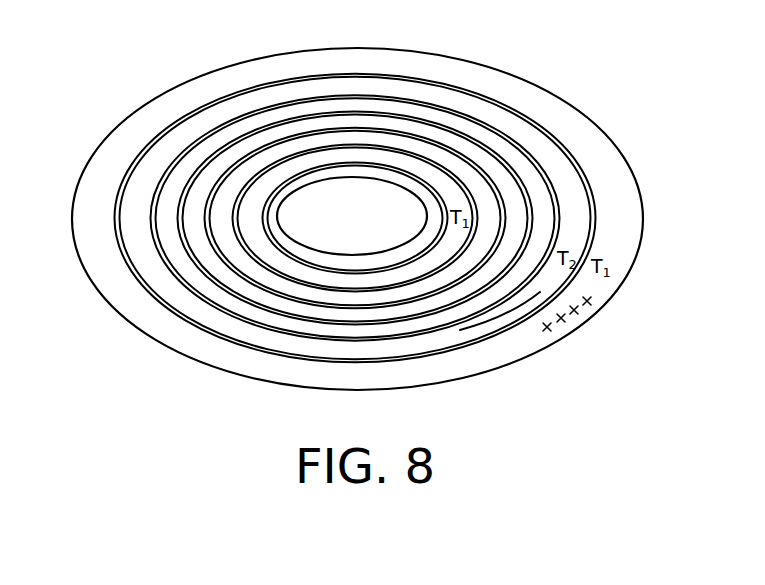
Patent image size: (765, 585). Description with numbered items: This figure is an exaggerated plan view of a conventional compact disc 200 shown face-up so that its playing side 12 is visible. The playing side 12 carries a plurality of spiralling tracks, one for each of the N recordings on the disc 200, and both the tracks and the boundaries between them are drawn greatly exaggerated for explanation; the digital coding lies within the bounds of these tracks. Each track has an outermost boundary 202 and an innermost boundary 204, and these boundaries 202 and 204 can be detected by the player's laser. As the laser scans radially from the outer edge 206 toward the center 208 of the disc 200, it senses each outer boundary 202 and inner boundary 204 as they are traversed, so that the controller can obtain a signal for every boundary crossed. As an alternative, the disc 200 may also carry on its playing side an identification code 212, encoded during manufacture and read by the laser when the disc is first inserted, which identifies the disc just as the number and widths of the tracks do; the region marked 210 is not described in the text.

The compact disc 200 is at (518, 68).
The playing side 12 is at (598, 148).
The outer edge 206 is at (631, 230).
The center 208 is at (312, 248).
The outermost boundary 202 is at (130, 262).
The innermost boundary 204 is at (162, 297).
The track region 210 is at (488, 306).
The identification code 212 is at (578, 327).